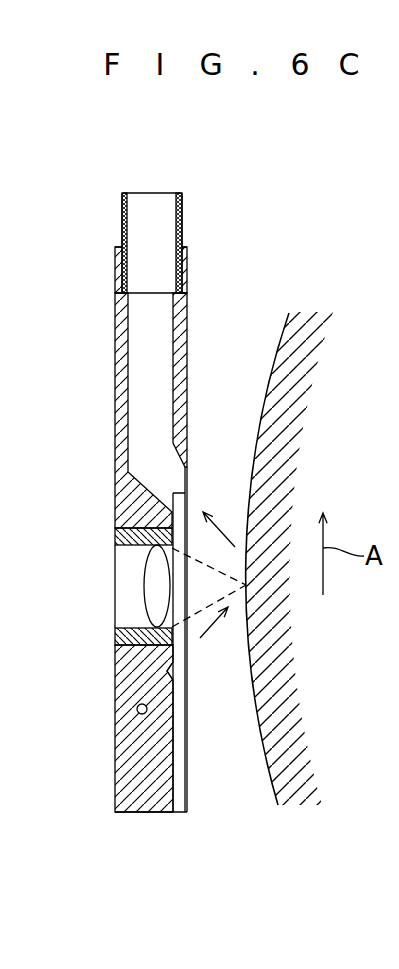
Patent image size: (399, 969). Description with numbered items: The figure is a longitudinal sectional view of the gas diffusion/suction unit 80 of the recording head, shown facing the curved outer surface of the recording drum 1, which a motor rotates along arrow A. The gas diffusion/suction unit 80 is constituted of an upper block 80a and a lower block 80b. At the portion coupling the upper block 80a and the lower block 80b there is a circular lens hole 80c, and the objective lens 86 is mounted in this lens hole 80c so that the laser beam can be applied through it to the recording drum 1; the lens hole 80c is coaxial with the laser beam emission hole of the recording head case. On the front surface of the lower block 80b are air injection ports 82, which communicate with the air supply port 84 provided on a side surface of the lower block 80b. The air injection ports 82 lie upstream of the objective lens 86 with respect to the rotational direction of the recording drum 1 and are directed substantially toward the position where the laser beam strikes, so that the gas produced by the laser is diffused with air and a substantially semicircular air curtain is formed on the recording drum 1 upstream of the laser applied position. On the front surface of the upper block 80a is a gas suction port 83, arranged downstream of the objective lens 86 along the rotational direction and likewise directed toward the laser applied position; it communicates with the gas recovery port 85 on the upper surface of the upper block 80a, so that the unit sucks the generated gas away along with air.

The recording drum 1 is at (282, 333).
The gas diffusion/suction unit 80 is at (72, 272).
The upper block 80a is at (115, 328).
The lower block 80b is at (117, 663).
The lens hole 80c is at (133, 592).
The air injection ports 82 is at (175, 668).
The gas suction port 83 is at (183, 473).
The air supply port 84 is at (137, 710).
The gas recovery port 85 is at (148, 212).
The objective lens 86 is at (148, 553).